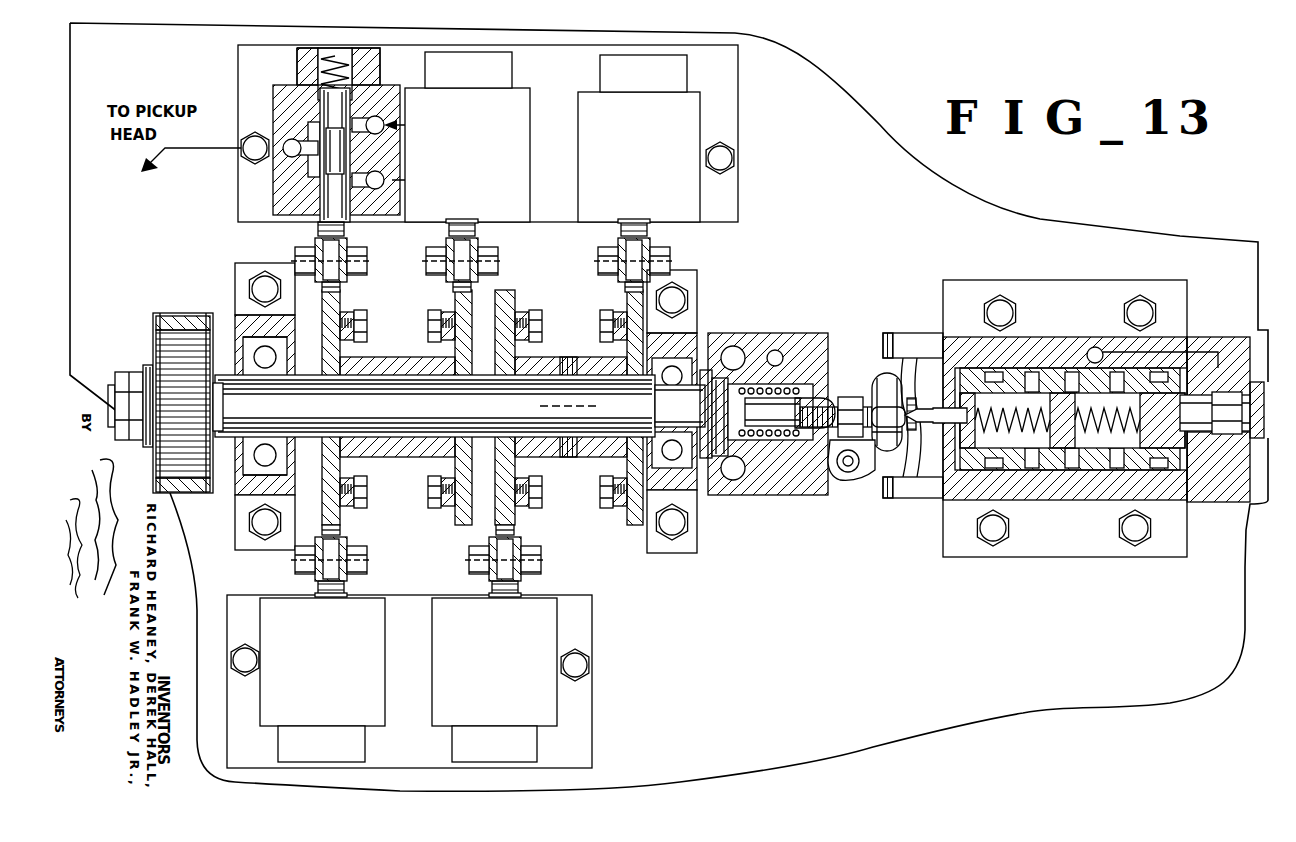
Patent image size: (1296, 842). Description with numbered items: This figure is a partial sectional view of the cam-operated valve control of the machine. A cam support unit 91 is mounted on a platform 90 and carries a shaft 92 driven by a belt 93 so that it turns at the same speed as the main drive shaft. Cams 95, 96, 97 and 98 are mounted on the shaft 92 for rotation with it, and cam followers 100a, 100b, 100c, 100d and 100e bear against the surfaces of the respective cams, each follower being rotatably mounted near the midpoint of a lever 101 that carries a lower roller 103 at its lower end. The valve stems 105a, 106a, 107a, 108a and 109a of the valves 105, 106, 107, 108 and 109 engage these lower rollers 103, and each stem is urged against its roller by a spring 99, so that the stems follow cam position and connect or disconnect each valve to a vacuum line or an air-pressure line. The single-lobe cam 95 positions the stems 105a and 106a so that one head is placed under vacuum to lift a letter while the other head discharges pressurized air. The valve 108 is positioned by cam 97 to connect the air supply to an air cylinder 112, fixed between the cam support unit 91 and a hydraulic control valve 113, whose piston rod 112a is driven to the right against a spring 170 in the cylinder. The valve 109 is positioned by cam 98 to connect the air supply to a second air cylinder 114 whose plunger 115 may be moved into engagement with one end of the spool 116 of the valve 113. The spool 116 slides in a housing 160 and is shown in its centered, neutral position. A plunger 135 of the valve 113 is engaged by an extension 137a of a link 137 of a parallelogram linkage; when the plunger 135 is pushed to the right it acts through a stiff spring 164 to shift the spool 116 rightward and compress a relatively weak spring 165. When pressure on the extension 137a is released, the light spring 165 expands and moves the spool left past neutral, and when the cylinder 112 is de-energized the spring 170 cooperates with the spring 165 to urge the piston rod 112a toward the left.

The platform 90 is at (884, 626).
The cam support unit 91 is at (243, 313).
The shaft 92 is at (434, 412).
The belt 93 is at (190, 318).
The cam 95 is at (328, 443).
The cam 96 is at (460, 445).
The cam 97 is at (503, 445).
The cam 98 is at (632, 445).
The spring 99 is at (338, 84).
The cam follower 100a is at (348, 286).
The cam follower 100b is at (340, 524).
The cam follower 100c is at (490, 282).
The cam follower 100d is at (512, 529).
The cam follower 100e is at (622, 288).
The lever 101 is at (368, 266).
The lower roller 103 is at (346, 236).
The valve 105 is at (285, 92).
The valve stem 105a is at (318, 222).
The valve 106 is at (272, 703).
The valve stem 106a is at (340, 590).
The valve 107 is at (523, 98).
The valve stem 107a is at (449, 226).
The valve 108 is at (448, 712).
The valve stem 108a is at (515, 594).
The valve 109 is at (698, 106).
The valve stem 109a is at (648, 224).
The air cylinder 112 is at (758, 347).
The piston rod 112a is at (833, 393).
The hydraulic control valve 113 is at (1007, 342).
The air cylinder 114 is at (1187, 343).
The plunger 115 is at (1238, 440).
The spool 116 is at (1087, 438).
The plunger 135 is at (913, 487).
The link 137 is at (883, 450).
The link extension 137a is at (932, 385).
The housing 160 is at (1063, 352).
The stiff spring 164 is at (982, 427).
The weak spring 165 is at (1130, 425).
The spring 170 is at (778, 443).